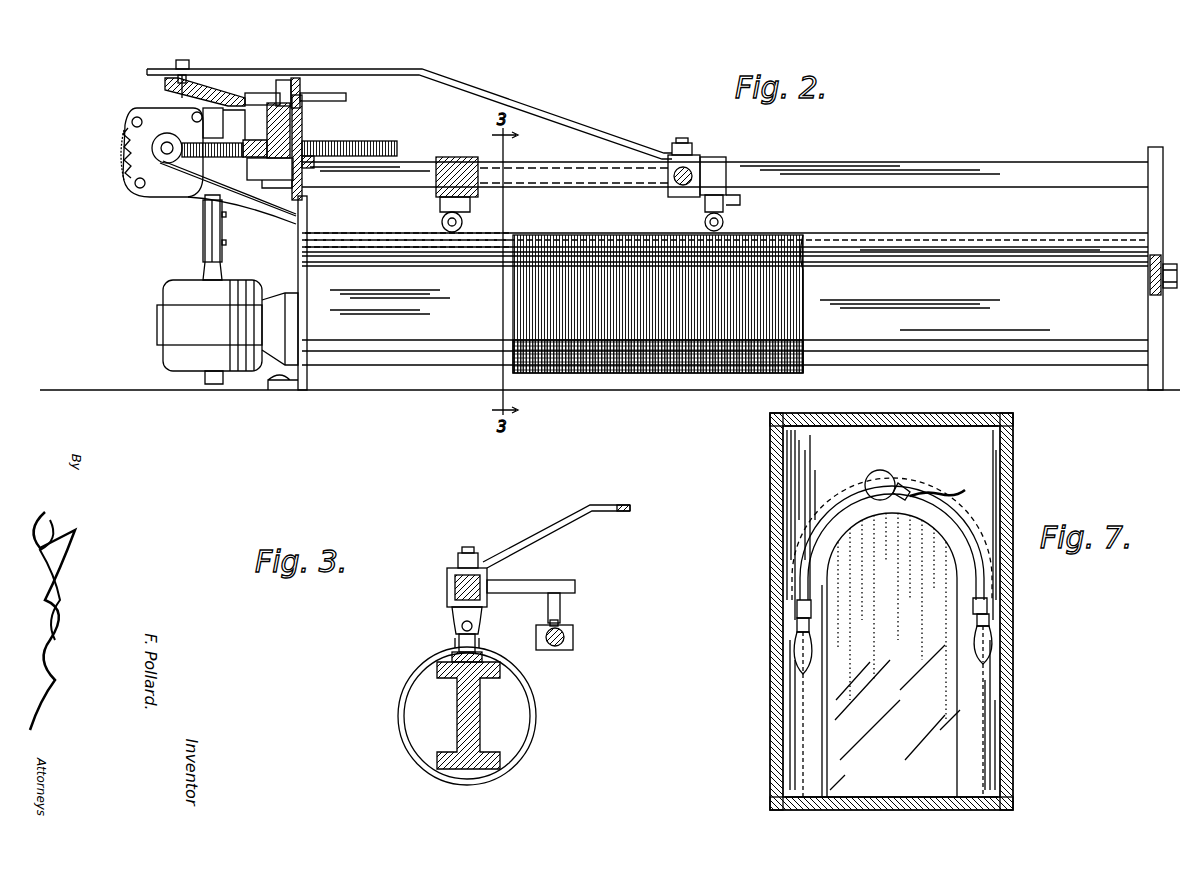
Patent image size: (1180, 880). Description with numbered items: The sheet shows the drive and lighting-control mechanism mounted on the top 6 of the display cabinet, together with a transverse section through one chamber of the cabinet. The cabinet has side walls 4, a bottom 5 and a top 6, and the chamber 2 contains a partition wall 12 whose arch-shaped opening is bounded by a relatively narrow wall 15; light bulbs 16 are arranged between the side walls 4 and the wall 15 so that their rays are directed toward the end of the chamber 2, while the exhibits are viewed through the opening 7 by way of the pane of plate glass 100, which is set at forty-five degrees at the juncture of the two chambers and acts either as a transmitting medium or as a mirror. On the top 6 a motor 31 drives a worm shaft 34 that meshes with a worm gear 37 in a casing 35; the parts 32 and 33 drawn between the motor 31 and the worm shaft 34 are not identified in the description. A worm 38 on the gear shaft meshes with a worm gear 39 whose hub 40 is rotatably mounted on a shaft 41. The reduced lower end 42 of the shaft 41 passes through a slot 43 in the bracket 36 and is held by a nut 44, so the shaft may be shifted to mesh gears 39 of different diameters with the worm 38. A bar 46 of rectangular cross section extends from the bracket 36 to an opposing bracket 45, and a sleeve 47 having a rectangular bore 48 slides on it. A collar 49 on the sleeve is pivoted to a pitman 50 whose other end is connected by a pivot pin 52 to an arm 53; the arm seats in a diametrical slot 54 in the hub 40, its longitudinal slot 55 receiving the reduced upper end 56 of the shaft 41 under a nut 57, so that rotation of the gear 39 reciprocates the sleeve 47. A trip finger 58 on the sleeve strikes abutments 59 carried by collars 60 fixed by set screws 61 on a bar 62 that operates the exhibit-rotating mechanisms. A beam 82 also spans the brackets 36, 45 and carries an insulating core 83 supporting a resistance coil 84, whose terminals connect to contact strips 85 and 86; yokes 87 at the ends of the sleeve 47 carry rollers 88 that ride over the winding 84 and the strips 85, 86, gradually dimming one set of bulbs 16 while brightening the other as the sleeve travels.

In FIG. 7, the chamber 2 is at (990, 525).
In FIG. 7, the side walls 4 is at (770, 526).
In FIG. 7, the bottom 5 is at (900, 797).
In FIG. 7, the top 6 is at (985, 420).
In FIG. 7, the opening 7 is at (990, 742).
In FIG. 7, the partition wall 12 is at (985, 492).
In FIG. 7, the narrow wall 15 is at (962, 695).
In FIG. 7, the light bulbs 16 is at (892, 480).
In FIG. 7, the pane of plate glass 100 is at (895, 651).
In FIG. 2, the motor 31 is at (226, 284).
In FIG. 2, the motor shaft 32 is at (203, 258).
In FIG. 2, the shaft sleeve 33 is at (222, 235).
In FIG. 2, the worm shaft 34 is at (205, 190).
In FIG. 2, the casing 35 is at (150, 118).
In FIG. 2, the bracket 36 is at (270, 192).
In FIG. 2, the worm gear 37 is at (124, 152).
In FIG. 2, the worm 38 is at (152, 140).
In FIG. 2, the worm gear 39 is at (340, 146).
In FIG. 2, the hub 40 is at (304, 130).
In FIG. 2, the shaft 41 is at (282, 130).
In FIG. 2, the reduced lower end 42 is at (314, 162).
In FIG. 2, the slot 43 is at (268, 170).
In FIG. 2, the nut 44 is at (300, 182).
In FIG. 2, the bracket 45 is at (1150, 208).
In FIG. 2, the bar 46 is at (905, 163).
In FIG. 3, the bar 46 is at (450, 605).
In FIG. 2, the sleeve 47 is at (553, 172).
In FIG. 3, the sleeve 47 is at (482, 580).
In FIG. 2, the rectangular bore 48 is at (460, 158).
In FIG. 3, the rectangular bore 48 is at (447, 595).
In FIG. 2, the collar 49 is at (692, 160).
In FIG. 3, the collar 49 is at (470, 556).
In FIG. 2, the pitman 50 is at (568, 116).
In FIG. 3, the pitman 50 is at (570, 512).
In FIG. 2, the pivot pin 52 is at (184, 68).
In FIG. 2, the arm 53 is at (212, 84).
In FIG. 2, the slot 54 is at (280, 82).
In FIG. 2, the longitudinal slot 55 is at (258, 90).
In FIG. 2, the reduced upper end 56 is at (302, 96).
In FIG. 2, the nut 57 is at (296, 78).
In FIG. 2, the trip finger 58 is at (670, 190).
In FIG. 3, the trip finger 58 is at (540, 583).
In FIG. 3, the abutments 59 is at (561, 605).
In FIG. 3, the collars 60 is at (574, 637).
In FIG. 3, the set screws 61 is at (560, 625).
In FIG. 3, the bar 62 is at (555, 650).
In FIG. 2, the beam 82 is at (945, 240).
In FIG. 3, the beam 82 is at (476, 725).
In FIG. 2, the core 83 is at (805, 330).
In FIG. 3, the core 83 is at (530, 704).
In FIG. 2, the resistance coil 84 is at (555, 378).
In FIG. 3, the resistance coil 84 is at (517, 762).
In FIG. 2, the contact strip 85 is at (480, 235).
In FIG. 3, the contact strip 85 is at (480, 650).
In FIG. 2, the contact strip 86 is at (878, 232).
In FIG. 2, the yokes 87 is at (726, 206).
In FIG. 3, the yokes 87 is at (490, 643).
In FIG. 2, the rollers 88 is at (705, 220).